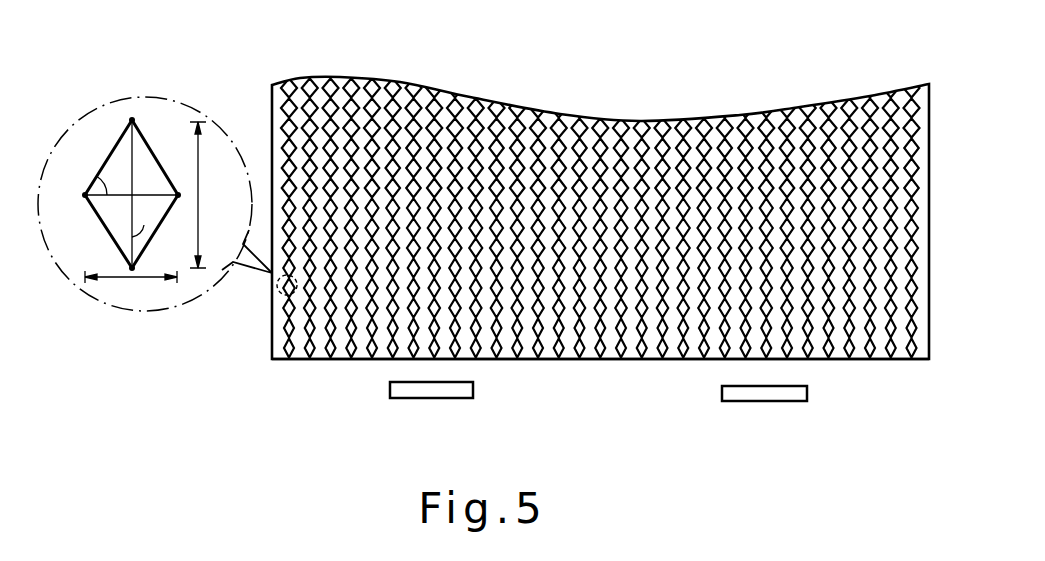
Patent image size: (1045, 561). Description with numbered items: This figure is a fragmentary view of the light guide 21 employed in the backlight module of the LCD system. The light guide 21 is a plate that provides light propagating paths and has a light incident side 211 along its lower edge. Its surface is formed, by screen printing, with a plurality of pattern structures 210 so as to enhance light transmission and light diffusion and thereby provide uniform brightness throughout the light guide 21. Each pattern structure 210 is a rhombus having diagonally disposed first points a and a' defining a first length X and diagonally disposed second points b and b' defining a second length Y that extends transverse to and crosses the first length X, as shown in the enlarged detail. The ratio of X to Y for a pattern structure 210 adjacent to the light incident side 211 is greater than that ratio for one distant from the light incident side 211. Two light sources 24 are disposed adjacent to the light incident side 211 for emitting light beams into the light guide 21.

The light guide 21 is at (703, 103).
The pattern structures 210 is at (110, 227).
The light incident side 211 is at (340, 361).
The light sources 24 is at (417, 392).